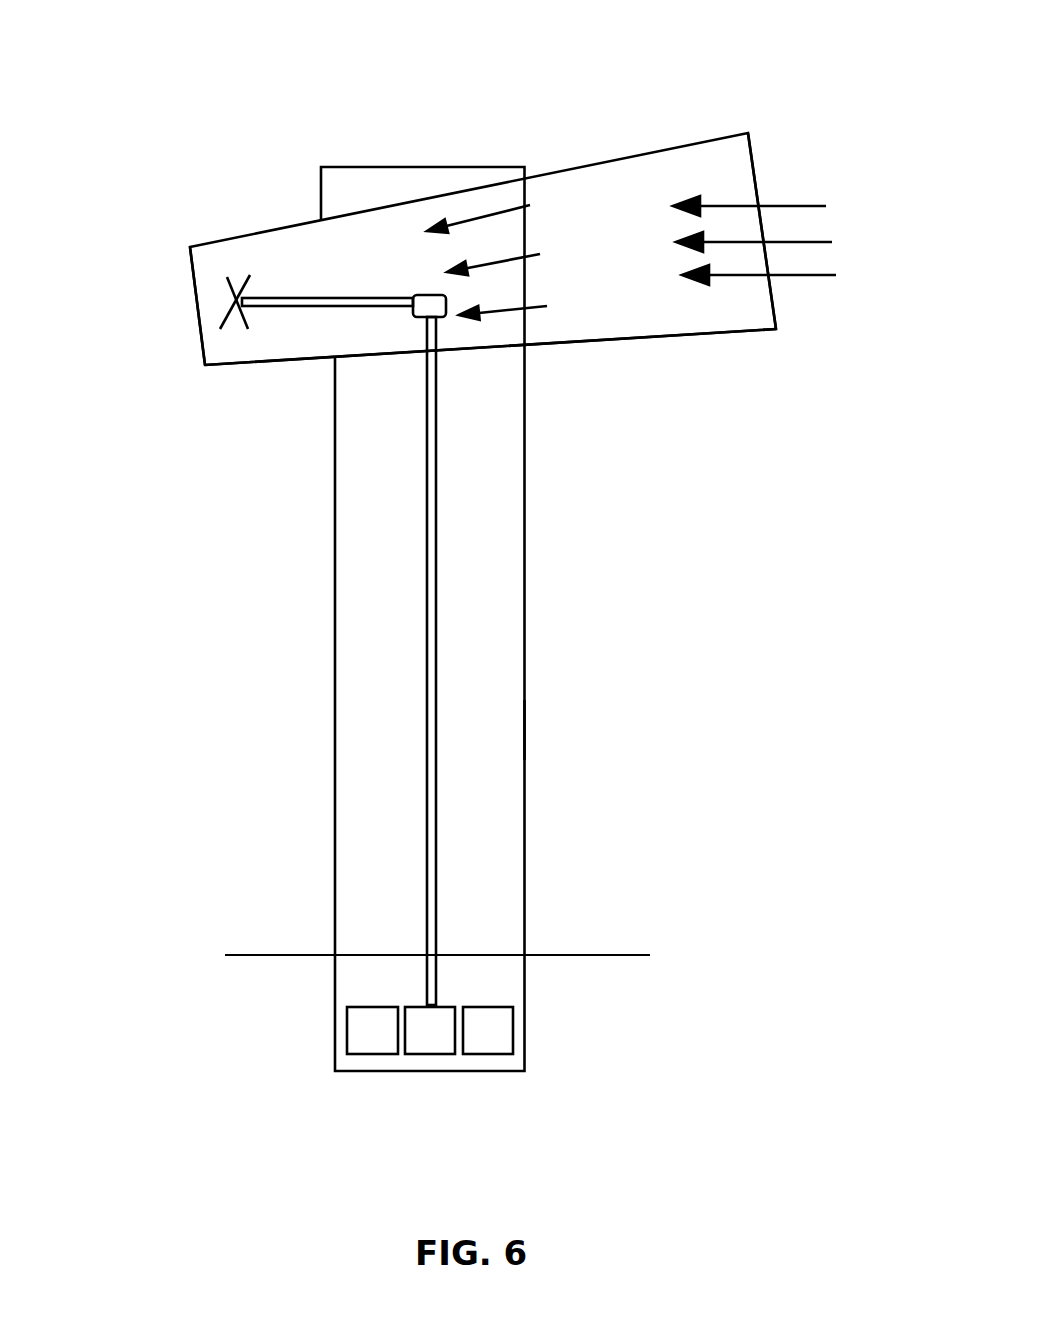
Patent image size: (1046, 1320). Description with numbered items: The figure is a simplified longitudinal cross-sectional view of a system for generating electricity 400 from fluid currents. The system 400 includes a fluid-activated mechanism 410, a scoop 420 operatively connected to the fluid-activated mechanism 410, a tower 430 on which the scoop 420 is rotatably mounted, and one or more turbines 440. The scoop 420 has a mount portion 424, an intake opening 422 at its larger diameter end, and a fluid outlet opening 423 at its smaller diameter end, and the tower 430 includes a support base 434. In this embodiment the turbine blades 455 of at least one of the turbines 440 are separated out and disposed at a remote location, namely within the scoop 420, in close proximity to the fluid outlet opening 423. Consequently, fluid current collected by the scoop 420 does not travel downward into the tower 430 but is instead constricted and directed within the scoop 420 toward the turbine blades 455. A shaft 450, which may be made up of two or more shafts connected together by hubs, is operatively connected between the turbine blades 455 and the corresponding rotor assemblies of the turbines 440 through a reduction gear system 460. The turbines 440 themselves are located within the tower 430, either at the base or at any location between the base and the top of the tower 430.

The system for generating electricity 400 is at (229, 448).
The fluid-activated mechanism 410 is at (432, 180).
The scoop 420 is at (622, 197).
The intake opening 422 is at (773, 302).
The fluid outlet opening 423 is at (197, 327).
The mount portion 424 is at (391, 350).
The tower 430 is at (483, 636).
The support base 434 is at (524, 723).
The turbines 440 is at (380, 1053).
The shaft 450 is at (287, 295).
The turbine blades 455 is at (230, 295).
The reduction gear system 460 is at (448, 312).